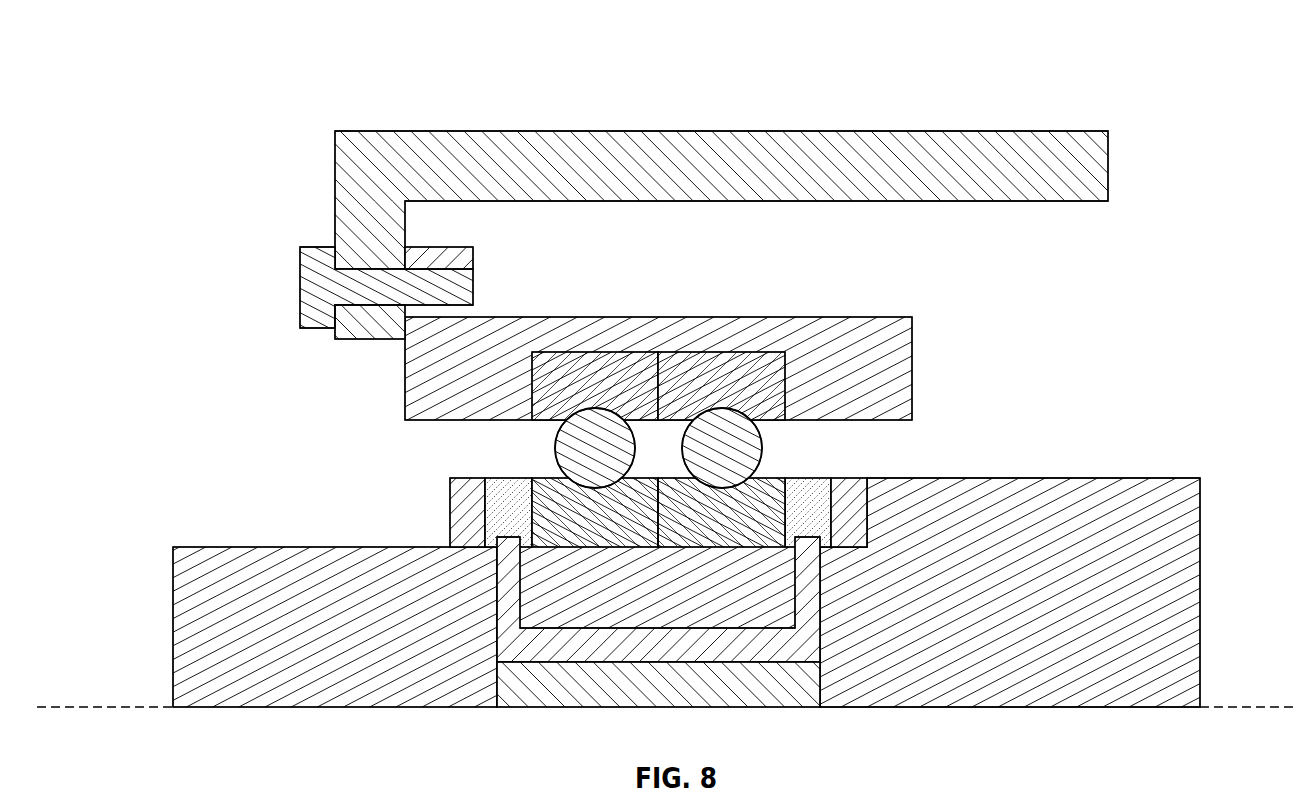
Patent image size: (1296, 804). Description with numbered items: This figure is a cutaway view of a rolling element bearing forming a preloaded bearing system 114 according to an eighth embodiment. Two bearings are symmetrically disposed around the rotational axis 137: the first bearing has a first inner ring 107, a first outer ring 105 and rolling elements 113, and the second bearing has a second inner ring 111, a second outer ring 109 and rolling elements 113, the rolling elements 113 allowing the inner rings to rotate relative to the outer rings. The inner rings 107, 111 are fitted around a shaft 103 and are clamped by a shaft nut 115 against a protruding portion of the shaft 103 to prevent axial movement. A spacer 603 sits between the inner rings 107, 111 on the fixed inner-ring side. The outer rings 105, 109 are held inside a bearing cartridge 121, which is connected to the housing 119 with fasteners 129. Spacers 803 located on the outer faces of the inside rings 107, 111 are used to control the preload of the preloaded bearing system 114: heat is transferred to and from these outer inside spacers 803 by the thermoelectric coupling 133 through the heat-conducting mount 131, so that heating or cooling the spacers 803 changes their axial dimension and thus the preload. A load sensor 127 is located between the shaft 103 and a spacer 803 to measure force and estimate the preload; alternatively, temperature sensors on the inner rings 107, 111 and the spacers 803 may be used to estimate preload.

The shaft 103 is at (1138, 490).
The first outer ring 105 is at (700, 362).
The first inner ring 107 is at (767, 500).
The second outer ring 109 is at (562, 367).
The second inner ring 111 is at (542, 515).
The rolling elements 113 is at (573, 457).
The preloaded bearing system 114 is at (211, 75).
The shaft nut 115 is at (468, 537).
The housing 119 is at (1097, 178).
The bearing cartridge 121 is at (852, 328).
The load sensor 127 is at (857, 480).
The fasteners 129 is at (300, 313).
The heat-conducting mount 131 is at (820, 637).
The thermoelectric coupling 133 is at (820, 695).
The rotational axis 137 is at (98, 707).
The spacer 603 is at (643, 502).
The spacers 803 is at (497, 490).